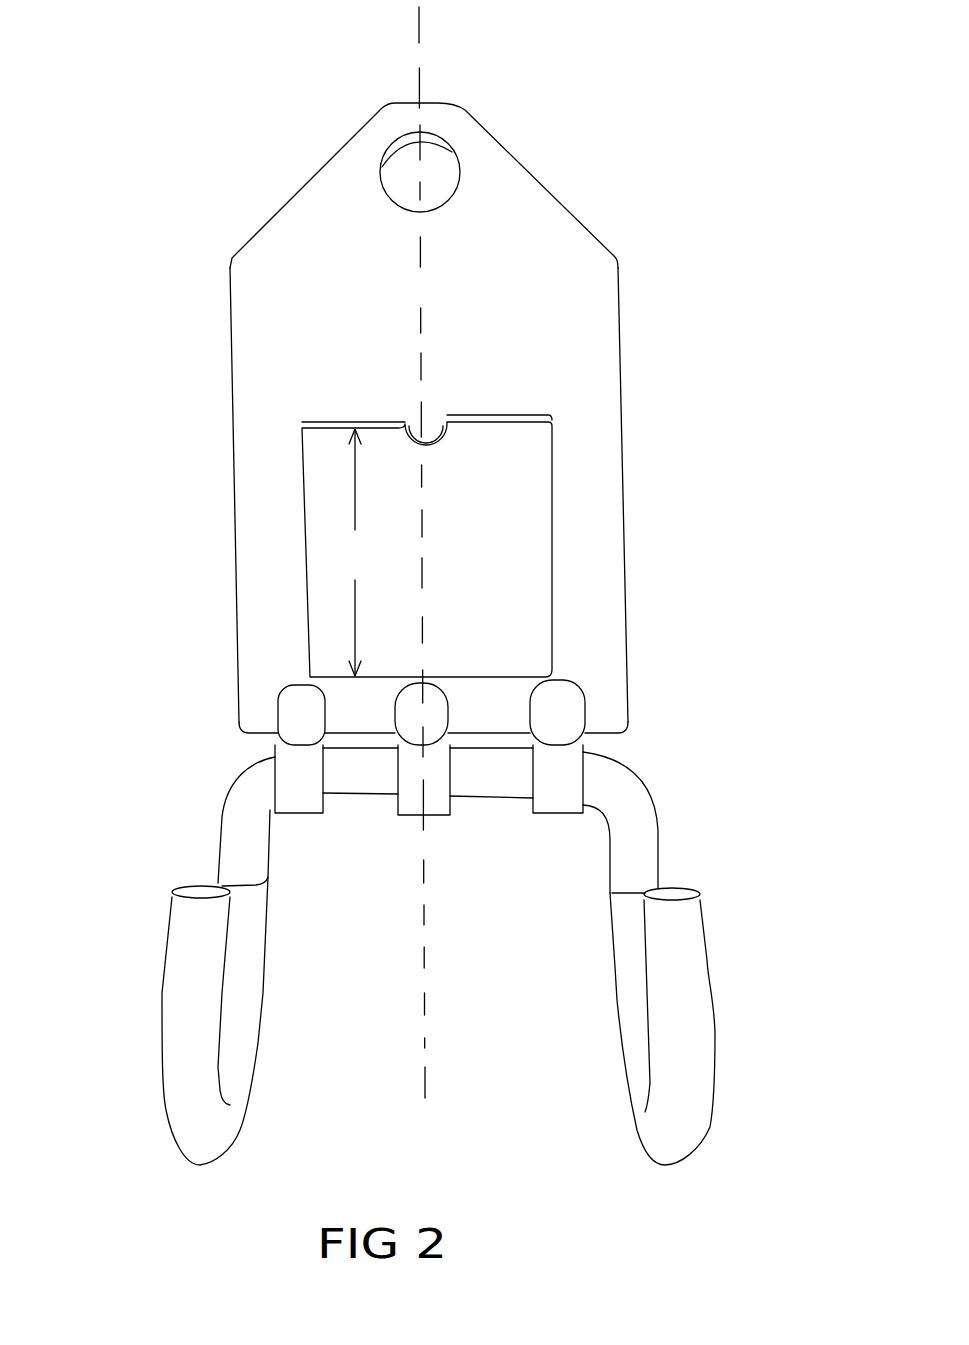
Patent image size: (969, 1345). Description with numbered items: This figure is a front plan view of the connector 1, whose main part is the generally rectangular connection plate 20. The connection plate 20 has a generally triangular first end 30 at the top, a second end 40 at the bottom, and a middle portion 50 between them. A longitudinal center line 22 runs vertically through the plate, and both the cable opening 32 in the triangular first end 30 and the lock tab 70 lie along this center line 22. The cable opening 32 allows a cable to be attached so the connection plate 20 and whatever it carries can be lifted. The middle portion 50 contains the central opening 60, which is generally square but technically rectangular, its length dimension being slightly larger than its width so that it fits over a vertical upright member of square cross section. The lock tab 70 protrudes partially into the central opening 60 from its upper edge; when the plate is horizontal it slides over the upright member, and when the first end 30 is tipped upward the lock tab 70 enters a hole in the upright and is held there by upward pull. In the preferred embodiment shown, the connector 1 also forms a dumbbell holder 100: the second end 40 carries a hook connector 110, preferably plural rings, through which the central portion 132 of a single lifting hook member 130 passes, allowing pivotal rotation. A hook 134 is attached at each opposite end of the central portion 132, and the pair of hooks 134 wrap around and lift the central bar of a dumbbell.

The connector 1 is at (624, 263).
The connection plate 20 is at (603, 393).
The longitudinal center line 22 is at (419, 28).
The first end 30 is at (302, 213).
The cable opening 32 is at (450, 172).
The second end 40 is at (251, 688).
The middle portion 50 is at (257, 523).
The central opening 60 is at (490, 558).
The lock tab 70 is at (441, 433).
The dumbbell holder 100 is at (655, 786).
The hook connector 110 is at (287, 762).
The lifting hook member 130 is at (657, 834).
The central portion 132 is at (360, 786).
The hooks 134 is at (173, 997).